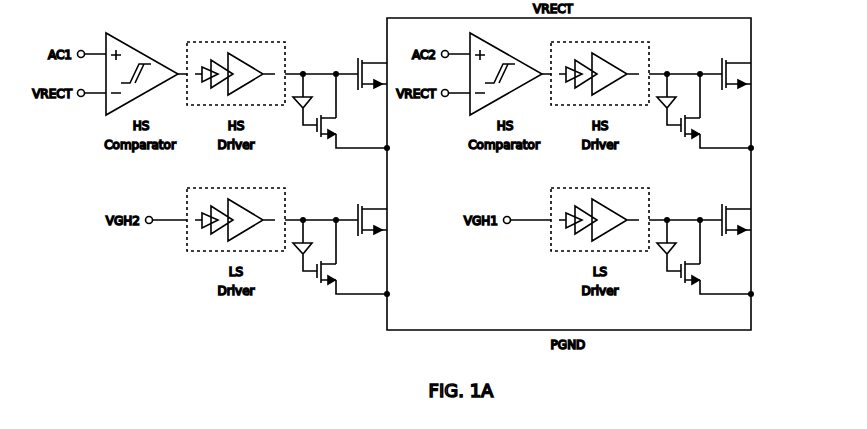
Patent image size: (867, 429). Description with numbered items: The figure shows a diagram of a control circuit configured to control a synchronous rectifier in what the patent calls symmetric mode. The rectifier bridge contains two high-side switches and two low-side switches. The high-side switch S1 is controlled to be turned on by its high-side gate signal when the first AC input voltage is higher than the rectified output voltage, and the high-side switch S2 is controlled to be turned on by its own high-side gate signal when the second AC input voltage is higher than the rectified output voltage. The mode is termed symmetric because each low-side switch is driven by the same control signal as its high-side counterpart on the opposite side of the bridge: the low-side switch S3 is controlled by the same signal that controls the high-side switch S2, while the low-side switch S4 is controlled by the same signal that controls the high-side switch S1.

The high-side switch S1 is at (337, 87).
The high-side switch S2 is at (713, 102).
The low-side switch S3 is at (351, 234).
The low-side switch S4 is at (715, 234).